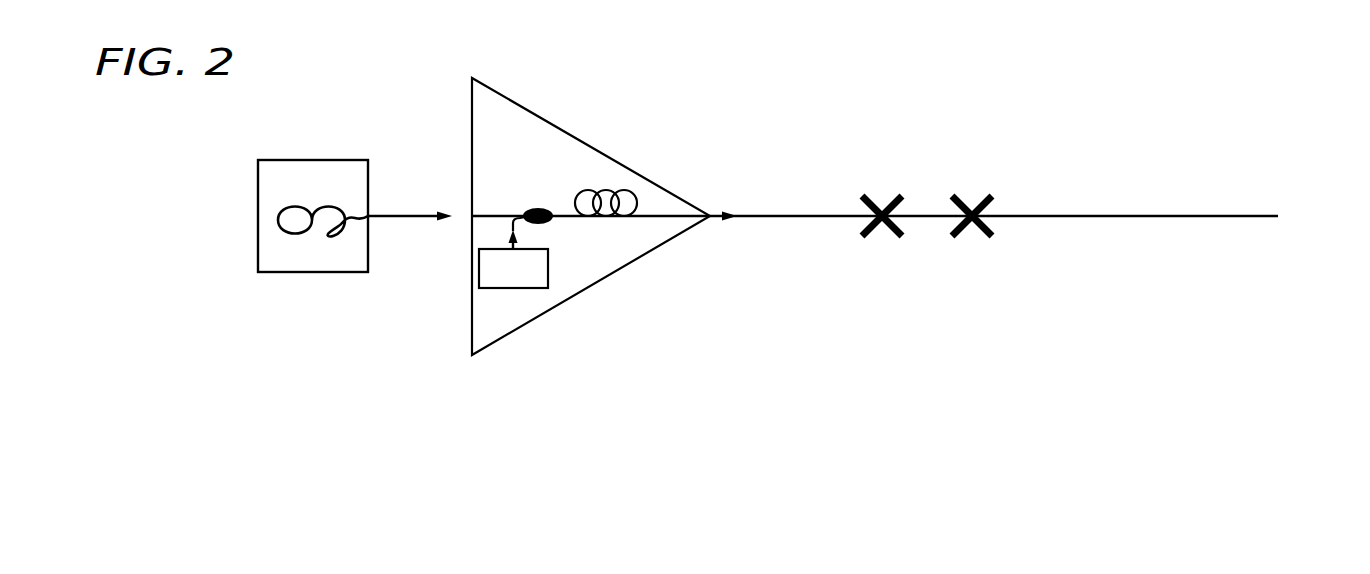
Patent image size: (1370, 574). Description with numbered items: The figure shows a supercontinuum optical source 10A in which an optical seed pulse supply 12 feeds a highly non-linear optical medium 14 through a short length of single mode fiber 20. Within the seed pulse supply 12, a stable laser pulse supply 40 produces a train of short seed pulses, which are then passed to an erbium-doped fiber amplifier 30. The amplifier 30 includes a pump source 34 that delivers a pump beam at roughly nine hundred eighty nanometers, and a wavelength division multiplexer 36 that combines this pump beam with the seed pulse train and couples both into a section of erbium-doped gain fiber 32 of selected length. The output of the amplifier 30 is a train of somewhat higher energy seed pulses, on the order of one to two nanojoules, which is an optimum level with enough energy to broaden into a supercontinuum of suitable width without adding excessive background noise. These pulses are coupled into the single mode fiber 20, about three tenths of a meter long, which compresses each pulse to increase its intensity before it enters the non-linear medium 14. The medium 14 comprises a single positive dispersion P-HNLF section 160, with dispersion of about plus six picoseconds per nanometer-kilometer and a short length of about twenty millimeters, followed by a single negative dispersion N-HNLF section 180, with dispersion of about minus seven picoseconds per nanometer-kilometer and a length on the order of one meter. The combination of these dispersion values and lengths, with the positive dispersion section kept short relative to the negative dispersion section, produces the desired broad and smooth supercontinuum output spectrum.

The SC optical source 10A is at (222, 134).
The optical seed pulse supply 12 is at (712, 363).
The highly non-linear optical medium 14 is at (1288, 125).
The single mode optical fiber 20 is at (757, 215).
The erbium-doped fiber amplifier 30 is at (553, 121).
The erbium-doped gain fiber 32 is at (600, 190).
The pump source 34 is at (519, 290).
The wavelength division multiplexer 36 is at (533, 205).
The stable laser pulse supply 40 is at (305, 160).
The P-HNLF section 160 is at (928, 213).
The N-HNLF section 180 is at (1128, 213).